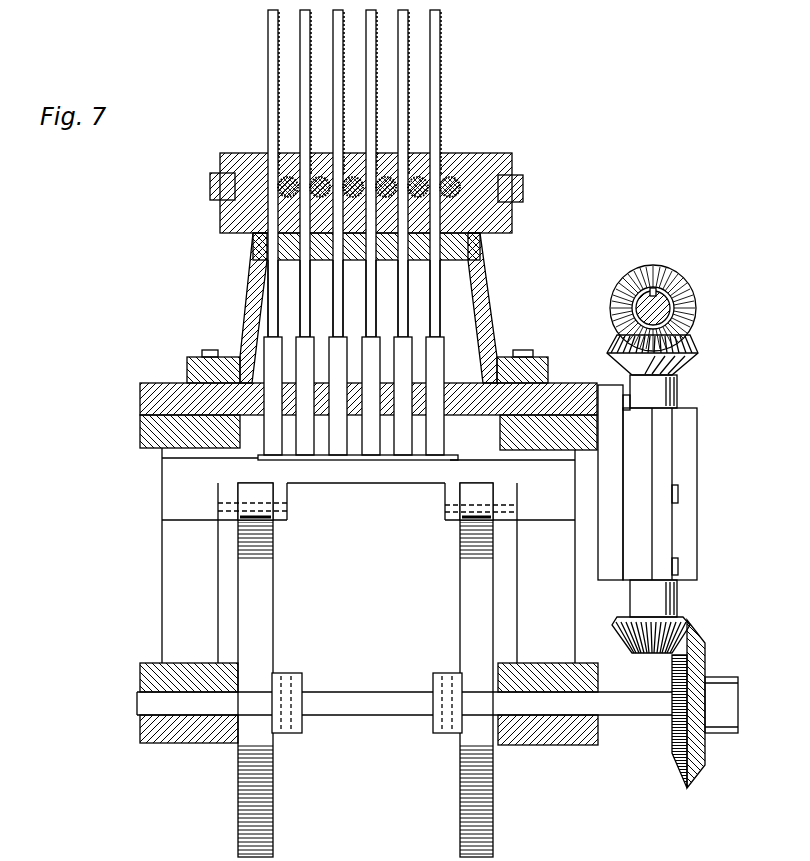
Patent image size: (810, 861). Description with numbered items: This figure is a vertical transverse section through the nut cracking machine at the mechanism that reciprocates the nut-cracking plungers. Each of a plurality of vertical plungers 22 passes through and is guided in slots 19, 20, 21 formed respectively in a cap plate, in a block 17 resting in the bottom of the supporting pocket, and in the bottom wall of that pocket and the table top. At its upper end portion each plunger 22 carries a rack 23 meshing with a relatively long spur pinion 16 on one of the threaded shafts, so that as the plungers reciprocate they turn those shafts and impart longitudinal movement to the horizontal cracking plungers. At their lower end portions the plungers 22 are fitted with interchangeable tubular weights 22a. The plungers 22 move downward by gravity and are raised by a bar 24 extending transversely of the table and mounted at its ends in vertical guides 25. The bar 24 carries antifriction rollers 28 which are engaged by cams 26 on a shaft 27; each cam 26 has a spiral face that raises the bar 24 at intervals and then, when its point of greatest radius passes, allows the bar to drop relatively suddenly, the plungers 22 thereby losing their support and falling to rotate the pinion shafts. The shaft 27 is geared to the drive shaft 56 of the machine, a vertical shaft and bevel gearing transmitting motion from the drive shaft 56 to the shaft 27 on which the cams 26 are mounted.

The spur pinion 16 is at (311, 173).
The block 17 is at (503, 222).
The slot 19 is at (487, 172).
The slot 20 is at (483, 255).
The slot 21 is at (447, 412).
The plunger 22 is at (424, 296).
The tubular weight 22a is at (442, 312).
The rack 23 is at (412, 103).
The bar 24 is at (386, 478).
The vertical guide 25 is at (162, 600).
The cam 26 is at (238, 837).
The shaft 27 is at (632, 718).
The antifriction roller 28 is at (275, 522).
The drive shaft 56 is at (655, 298).